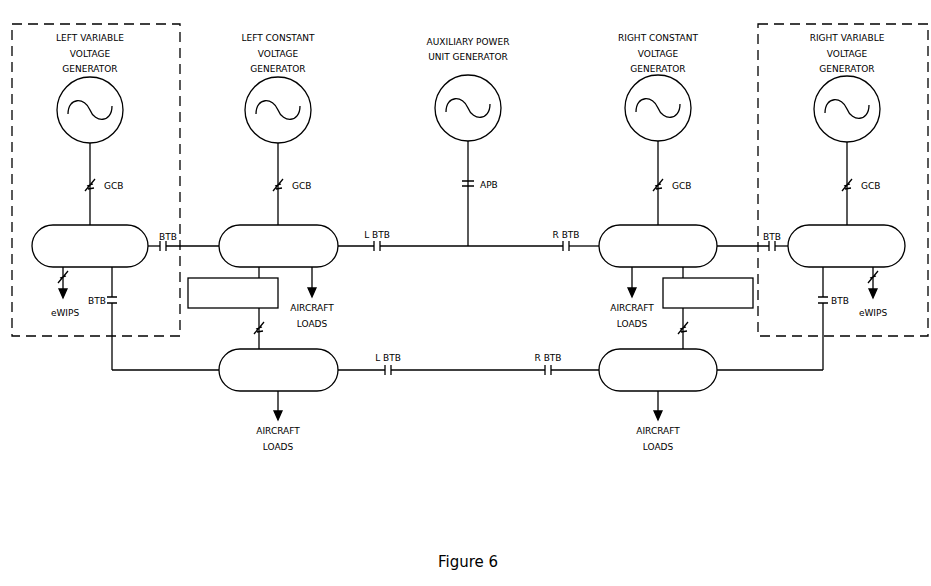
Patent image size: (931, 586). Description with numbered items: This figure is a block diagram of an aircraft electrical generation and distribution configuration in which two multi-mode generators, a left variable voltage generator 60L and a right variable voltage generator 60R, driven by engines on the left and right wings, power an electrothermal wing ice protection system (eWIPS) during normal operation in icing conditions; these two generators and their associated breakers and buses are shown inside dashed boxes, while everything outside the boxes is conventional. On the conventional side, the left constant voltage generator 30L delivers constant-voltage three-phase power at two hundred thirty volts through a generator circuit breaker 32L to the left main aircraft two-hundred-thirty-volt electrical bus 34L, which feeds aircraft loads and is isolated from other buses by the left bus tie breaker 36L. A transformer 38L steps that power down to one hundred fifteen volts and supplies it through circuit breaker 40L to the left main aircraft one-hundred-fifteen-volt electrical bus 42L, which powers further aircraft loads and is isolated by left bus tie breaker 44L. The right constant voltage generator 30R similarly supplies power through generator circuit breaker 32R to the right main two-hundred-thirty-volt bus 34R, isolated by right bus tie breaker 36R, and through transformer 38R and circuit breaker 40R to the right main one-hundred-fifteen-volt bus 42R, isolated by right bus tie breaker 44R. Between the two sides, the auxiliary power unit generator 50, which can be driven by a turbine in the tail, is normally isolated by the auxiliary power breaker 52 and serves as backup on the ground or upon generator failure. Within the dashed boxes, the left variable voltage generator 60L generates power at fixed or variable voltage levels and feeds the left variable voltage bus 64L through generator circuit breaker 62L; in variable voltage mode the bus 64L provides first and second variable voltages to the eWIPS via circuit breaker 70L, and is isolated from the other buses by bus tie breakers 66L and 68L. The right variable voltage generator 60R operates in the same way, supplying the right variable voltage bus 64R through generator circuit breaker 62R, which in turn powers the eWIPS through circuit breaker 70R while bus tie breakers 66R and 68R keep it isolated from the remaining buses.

The left variable voltage generator 60L is at (63, 130).
The left constant voltage generator 30L is at (250, 126).
The auxiliary power unit generator 50 is at (495, 127).
The right constant voltage generator 30R is at (637, 130).
The right variable voltage generator 60R is at (824, 131).
The generator circuit breaker 62L is at (85, 187).
The generator circuit breaker 32L is at (274, 186).
The auxiliary power breaker 52 is at (461, 183).
The generator circuit breaker 32R is at (654, 186).
The generator circuit breaker 62R is at (842, 187).
The left variable voltage bus 64L is at (58, 226).
The left main aircraft 230V electrical bus 34L is at (232, 227).
The right main aircraft 230V bus 34R is at (711, 228).
The right variable voltage bus 64R is at (873, 228).
The left main aircraft 115V electrical bus 42L is at (228, 351).
The right main aircraft 115V bus 42R is at (718, 358).
The bus tie breaker 66L is at (166, 256).
The left bus tie breaker 36L is at (376, 252).
The right bus tie breaker 36R is at (571, 251).
The bus tie breaker 66R is at (777, 256).
The left bus tie breaker 44L is at (387, 377).
The right bus tie breaker 44R is at (553, 377).
The bus tie breaker 68L is at (118, 301).
The bus tie breaker 68R is at (818, 301).
The transformer 38L is at (218, 279).
The circuit breaker 40L is at (255, 331).
The transformer 38R is at (723, 279).
The circuit breaker 40R is at (687, 334).
The circuit breaker 70L is at (57, 277).
The circuit breaker 70R is at (880, 280).